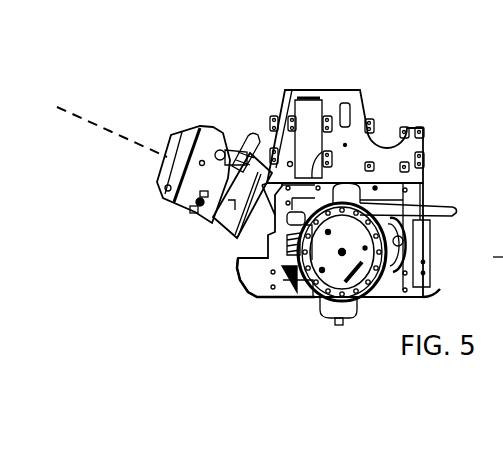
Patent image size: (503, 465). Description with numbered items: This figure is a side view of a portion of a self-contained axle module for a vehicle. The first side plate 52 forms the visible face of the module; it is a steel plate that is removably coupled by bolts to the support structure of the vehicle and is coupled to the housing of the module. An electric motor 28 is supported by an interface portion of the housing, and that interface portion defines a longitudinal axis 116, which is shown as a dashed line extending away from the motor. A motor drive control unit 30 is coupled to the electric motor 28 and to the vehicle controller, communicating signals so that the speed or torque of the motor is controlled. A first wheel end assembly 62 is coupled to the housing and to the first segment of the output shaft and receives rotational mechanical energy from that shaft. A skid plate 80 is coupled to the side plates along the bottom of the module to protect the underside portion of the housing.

The first side plate 52 is at (334, 100).
The motor drive control unit 30 is at (202, 128).
The electric motor 28 is at (243, 238).
The skid plate 80 is at (248, 290).
The first wheel end assembly 62 is at (317, 315).
The longitudinal axis 116 is at (127, 138).